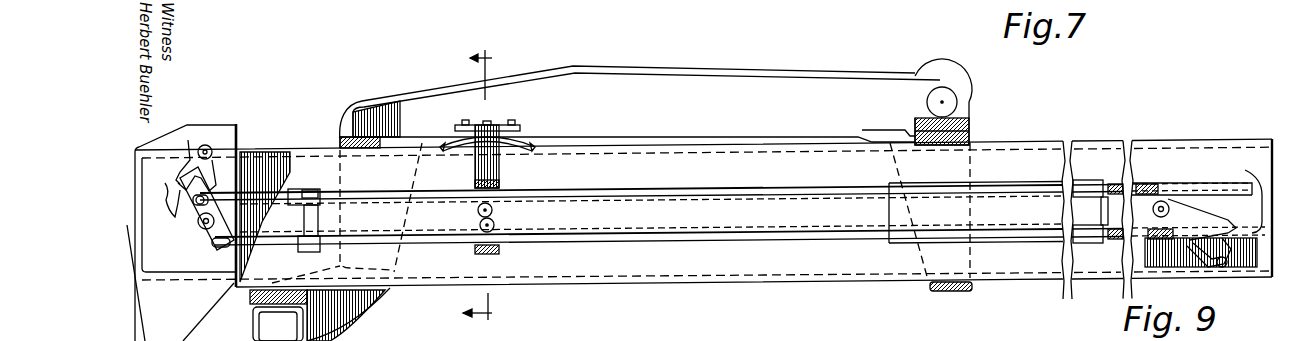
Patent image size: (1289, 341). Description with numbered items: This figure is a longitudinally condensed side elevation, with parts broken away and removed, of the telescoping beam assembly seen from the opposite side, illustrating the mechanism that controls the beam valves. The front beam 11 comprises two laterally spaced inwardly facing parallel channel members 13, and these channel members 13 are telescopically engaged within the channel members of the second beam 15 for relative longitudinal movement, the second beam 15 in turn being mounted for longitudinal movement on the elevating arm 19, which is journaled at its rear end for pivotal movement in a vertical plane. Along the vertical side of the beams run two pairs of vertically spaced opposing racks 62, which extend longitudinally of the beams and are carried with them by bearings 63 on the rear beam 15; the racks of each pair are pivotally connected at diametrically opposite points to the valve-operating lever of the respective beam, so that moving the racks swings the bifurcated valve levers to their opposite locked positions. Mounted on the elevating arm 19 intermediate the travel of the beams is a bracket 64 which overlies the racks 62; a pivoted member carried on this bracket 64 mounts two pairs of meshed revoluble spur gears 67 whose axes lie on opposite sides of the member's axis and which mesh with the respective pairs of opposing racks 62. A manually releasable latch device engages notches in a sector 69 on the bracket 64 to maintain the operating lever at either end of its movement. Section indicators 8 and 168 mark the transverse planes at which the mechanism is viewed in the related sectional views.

The section line 8- 8 is at (470, 75).
The beam 11 is at (222, 285).
The channel members 13 is at (1015, 274).
The second beam 15 is at (419, 296).
The elevating arm 19 is at (747, 72).
The racks 62 is at (666, 218).
The bearings 63 is at (905, 247).
The bracket 64 is at (530, 138).
The spur gears 67 is at (496, 214).
The sector 69 is at (500, 130).
The section line 168 is at (448, 287).